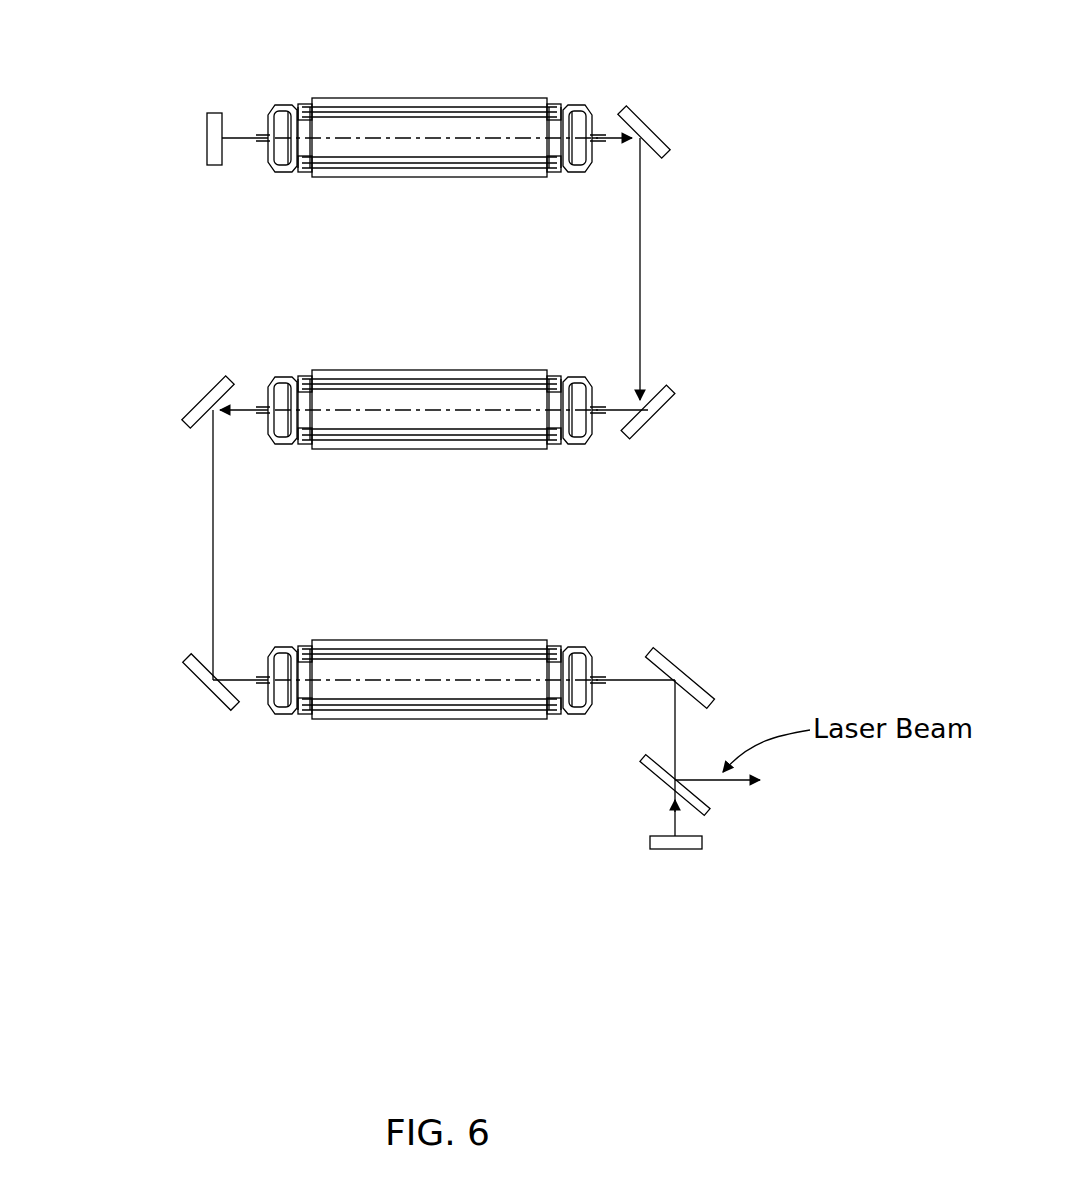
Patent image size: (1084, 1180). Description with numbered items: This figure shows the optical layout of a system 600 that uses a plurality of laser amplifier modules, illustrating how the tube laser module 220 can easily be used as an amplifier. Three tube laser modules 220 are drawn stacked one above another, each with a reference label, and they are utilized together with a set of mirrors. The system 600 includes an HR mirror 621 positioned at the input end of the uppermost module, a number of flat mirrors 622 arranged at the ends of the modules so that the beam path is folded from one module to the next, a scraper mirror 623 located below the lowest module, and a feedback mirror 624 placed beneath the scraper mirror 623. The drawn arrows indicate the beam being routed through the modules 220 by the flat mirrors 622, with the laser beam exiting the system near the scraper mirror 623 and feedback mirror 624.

The tube laser module 220 is at (473, 94).
The system 600 is at (372, 883).
The HR mirror 621 is at (205, 125).
The flat mirrors 622 is at (673, 137).
The scraper mirror 623 is at (650, 773).
The feedback mirror 624 is at (662, 852).